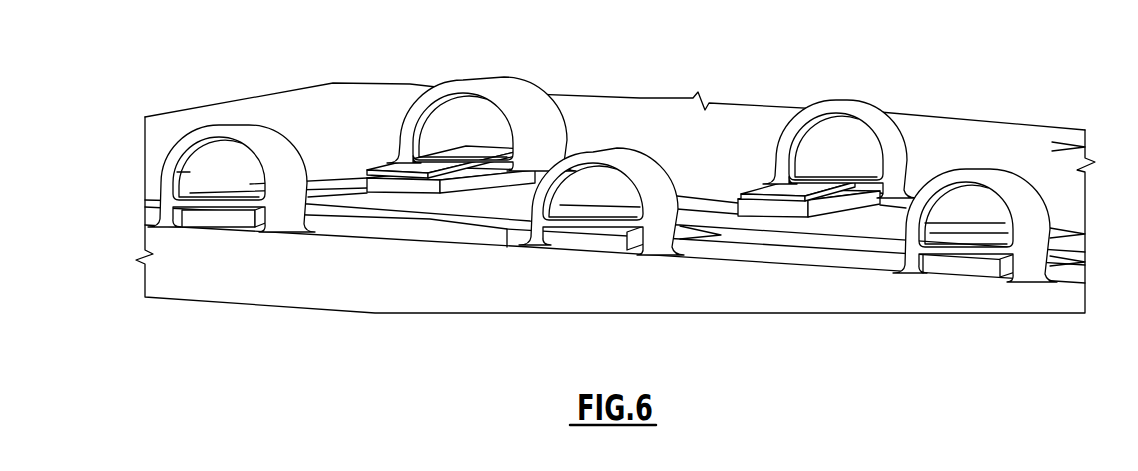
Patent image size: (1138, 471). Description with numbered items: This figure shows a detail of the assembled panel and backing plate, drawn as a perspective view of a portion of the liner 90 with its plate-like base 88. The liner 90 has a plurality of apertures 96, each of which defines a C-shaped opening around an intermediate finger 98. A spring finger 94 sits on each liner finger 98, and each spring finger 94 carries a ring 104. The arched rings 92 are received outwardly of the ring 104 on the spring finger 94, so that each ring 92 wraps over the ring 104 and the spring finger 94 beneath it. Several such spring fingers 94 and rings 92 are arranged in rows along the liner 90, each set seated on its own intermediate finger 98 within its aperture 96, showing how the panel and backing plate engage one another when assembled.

The substrate board 88 is at (403, 273).
The liner 90 is at (738, 128).
The ring 92 is at (515, 102).
The spring finger 94 is at (410, 157).
The aperture 96 is at (730, 207).
The intermediate finger 98 is at (778, 212).
The ring 104 is at (443, 113).